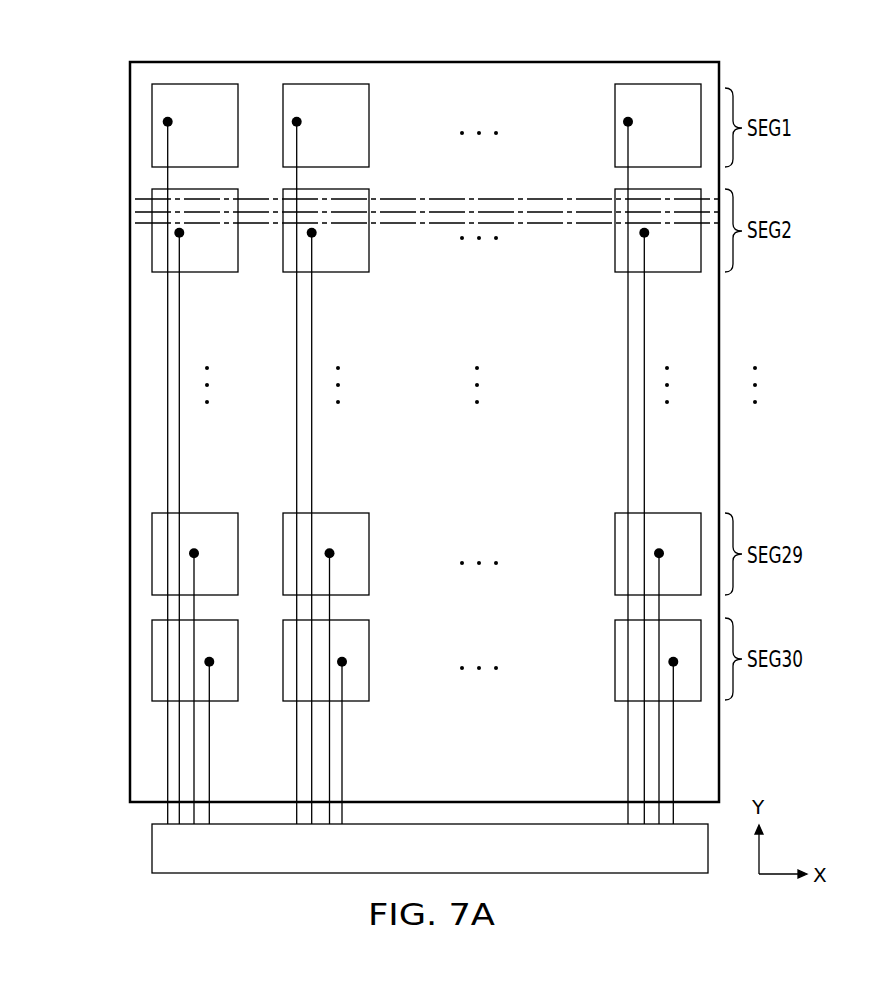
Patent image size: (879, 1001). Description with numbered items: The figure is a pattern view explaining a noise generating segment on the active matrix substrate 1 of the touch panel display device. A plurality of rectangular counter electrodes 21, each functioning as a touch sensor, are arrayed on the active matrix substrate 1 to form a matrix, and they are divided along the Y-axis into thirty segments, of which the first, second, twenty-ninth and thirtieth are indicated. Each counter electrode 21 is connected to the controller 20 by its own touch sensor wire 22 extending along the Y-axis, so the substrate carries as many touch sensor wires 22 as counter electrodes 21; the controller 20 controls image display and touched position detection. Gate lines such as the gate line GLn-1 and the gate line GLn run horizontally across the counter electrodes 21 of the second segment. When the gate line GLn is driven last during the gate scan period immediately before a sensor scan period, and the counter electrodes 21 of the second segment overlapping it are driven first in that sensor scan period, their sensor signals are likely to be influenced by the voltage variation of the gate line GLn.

The active matrix substrate 1 is at (130, 62).
The controller 20 is at (152, 858).
The counter electrode 21 is at (193, 84).
The touch sensor wire 22 is at (167, 415).
The gate line GLn-1 is at (148, 199).
The gate line GLn is at (148, 211).